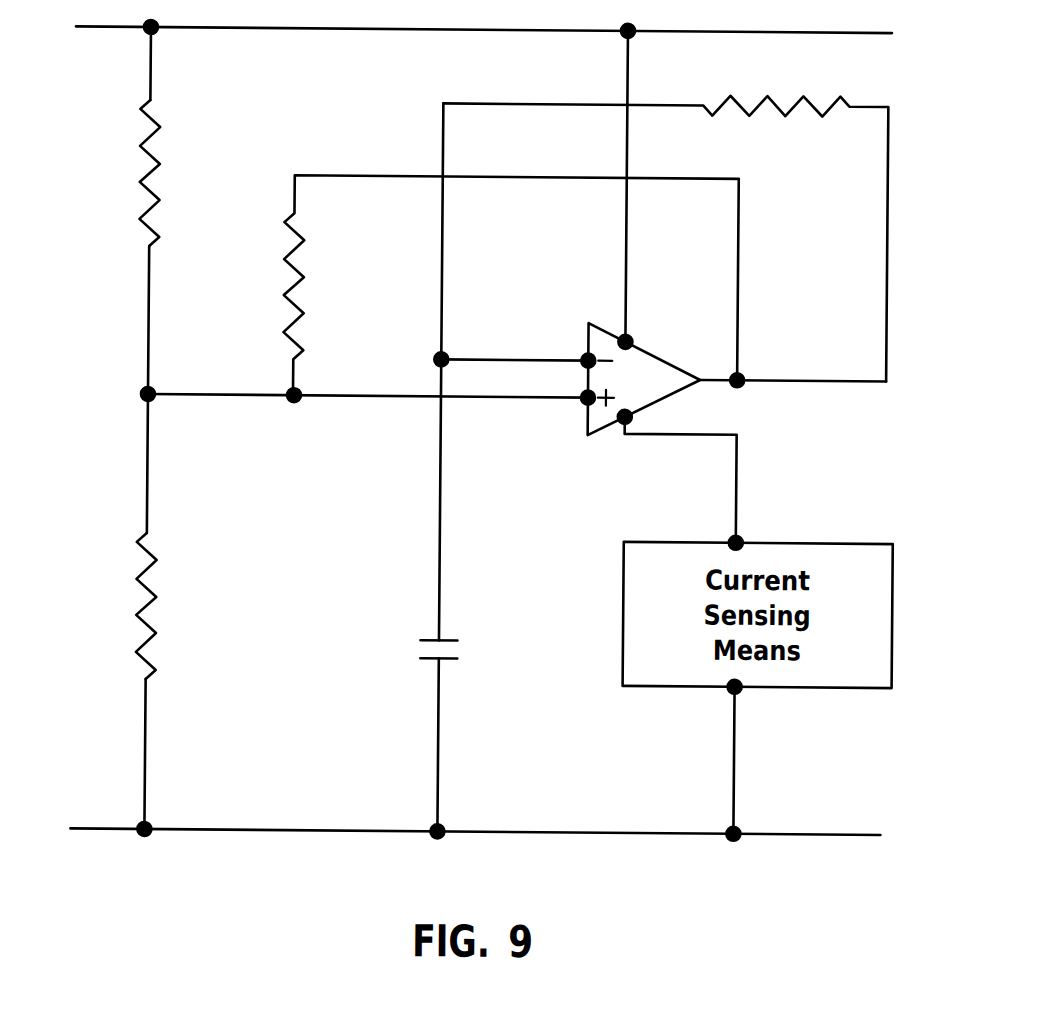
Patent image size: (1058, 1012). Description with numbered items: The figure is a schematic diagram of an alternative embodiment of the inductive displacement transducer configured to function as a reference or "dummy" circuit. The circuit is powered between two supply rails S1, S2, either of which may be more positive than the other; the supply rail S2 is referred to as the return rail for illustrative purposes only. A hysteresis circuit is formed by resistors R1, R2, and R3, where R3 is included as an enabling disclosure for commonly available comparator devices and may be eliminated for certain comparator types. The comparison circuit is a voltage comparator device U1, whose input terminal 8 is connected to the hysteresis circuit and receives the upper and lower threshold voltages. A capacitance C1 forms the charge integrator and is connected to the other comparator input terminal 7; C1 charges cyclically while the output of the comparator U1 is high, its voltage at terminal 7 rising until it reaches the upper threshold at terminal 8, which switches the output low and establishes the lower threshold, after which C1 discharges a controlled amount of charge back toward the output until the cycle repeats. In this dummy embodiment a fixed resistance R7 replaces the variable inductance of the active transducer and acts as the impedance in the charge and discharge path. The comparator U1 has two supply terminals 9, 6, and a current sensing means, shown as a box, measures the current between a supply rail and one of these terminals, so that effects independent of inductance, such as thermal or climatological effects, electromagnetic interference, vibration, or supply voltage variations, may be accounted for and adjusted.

The supply terminal 6 is at (624, 421).
The comparator input terminal 7 is at (586, 350).
The comparator input terminal 8 is at (585, 403).
The supply terminal 9 is at (637, 332).
The resistor R1 is at (171, 211).
The resistor R2 is at (170, 612).
The resistor R3 is at (511, 287).
The fixed resistance R7 is at (665, 220).
The capacitance C1 is at (466, 467).
The voltage comparator device U1 is at (737, 380).
The supply rail S1 is at (508, 34).
The supply rail S2 is at (501, 832).